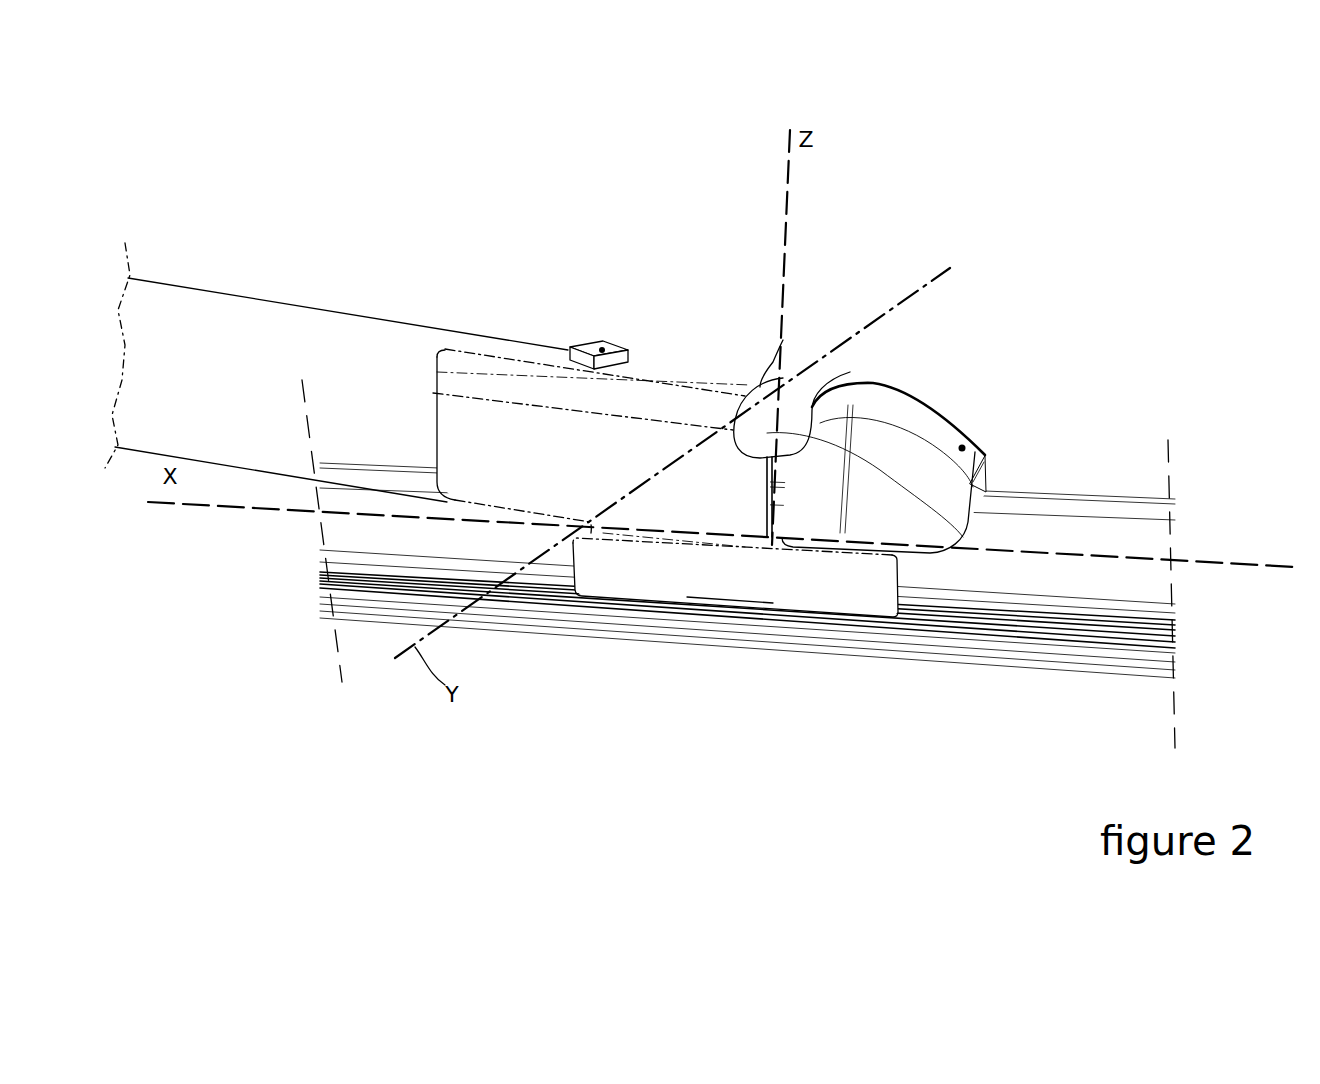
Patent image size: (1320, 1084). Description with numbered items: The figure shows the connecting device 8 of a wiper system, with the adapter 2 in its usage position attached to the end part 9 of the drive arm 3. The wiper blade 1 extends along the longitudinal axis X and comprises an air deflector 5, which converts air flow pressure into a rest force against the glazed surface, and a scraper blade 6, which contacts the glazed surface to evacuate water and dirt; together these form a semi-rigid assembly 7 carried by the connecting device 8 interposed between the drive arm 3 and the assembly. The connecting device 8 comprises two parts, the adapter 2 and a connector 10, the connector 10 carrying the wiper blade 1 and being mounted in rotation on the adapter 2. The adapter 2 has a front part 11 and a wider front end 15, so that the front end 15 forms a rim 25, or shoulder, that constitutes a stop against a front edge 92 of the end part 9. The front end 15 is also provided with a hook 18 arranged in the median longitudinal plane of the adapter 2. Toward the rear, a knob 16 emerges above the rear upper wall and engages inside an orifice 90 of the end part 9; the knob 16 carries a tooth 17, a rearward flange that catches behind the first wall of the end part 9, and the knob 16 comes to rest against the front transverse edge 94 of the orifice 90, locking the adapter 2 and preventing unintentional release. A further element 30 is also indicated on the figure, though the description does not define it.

The wiper blade 1 is at (359, 388).
The adapter 2 is at (893, 380).
The drive arm 3 is at (209, 275).
The air deflector 5 is at (1107, 500).
The scraper blade 6 is at (990, 660).
The semi-rigid assembly 7 is at (1203, 583).
The connecting device 8 is at (715, 245).
The end part 9 is at (523, 345).
The connector 10 is at (707, 598).
The front part 11 is at (913, 400).
The front end 15 is at (962, 448).
The knob 16 is at (602, 350).
The tooth 17 is at (577, 345).
The hook 18 is at (770, 375).
The rim 25 is at (812, 405).
The flap 30 is at (997, 481).
The orifice 90 is at (580, 367).
The front edge 92 is at (745, 376).
The front transverse edge 94 is at (560, 367).